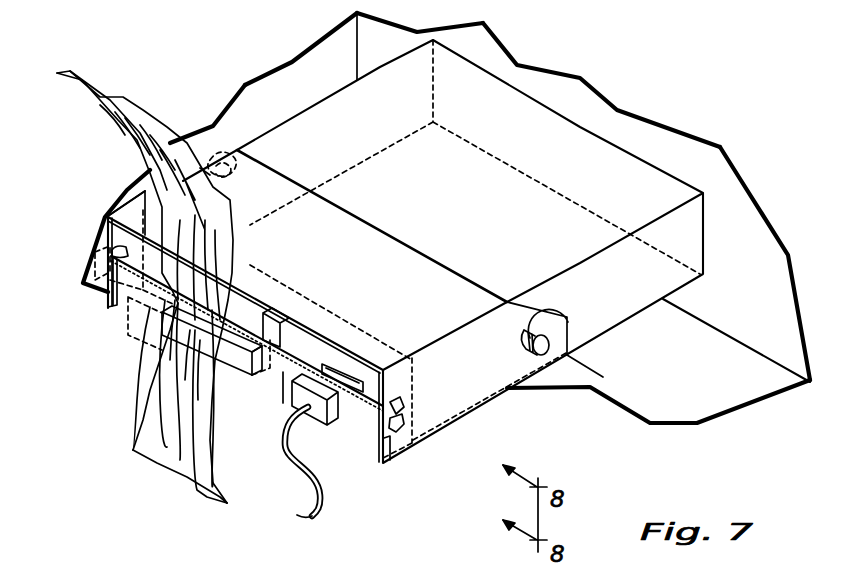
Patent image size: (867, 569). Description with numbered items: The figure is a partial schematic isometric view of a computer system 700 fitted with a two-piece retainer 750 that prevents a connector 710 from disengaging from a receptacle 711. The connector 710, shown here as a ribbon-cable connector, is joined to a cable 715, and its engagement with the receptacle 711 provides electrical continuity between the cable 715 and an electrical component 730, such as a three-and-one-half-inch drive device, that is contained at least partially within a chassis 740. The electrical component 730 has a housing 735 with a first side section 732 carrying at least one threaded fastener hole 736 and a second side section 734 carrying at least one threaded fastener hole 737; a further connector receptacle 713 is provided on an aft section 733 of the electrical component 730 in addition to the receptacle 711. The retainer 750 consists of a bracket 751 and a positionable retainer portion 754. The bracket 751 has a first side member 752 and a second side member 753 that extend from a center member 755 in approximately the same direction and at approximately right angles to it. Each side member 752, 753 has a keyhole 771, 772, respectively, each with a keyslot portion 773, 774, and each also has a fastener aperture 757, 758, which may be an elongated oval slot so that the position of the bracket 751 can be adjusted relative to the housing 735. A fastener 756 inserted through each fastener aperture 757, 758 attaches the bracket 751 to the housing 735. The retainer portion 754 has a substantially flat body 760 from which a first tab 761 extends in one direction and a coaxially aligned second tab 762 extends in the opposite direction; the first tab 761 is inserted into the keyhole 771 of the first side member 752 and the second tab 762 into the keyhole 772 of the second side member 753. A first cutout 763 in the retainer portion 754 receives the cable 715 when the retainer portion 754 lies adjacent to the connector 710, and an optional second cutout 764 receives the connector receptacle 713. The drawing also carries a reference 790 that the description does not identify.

The computer system 700 is at (778, 410).
The connector 710 is at (163, 345).
The receptacle 711 is at (272, 365).
The connector receptacle 713 is at (281, 463).
The cable 715 is at (170, 453).
The electrical component 730 is at (520, 107).
The first side section 732 is at (671, 276).
The aft section 733 is at (110, 227).
The second side section 734 is at (343, 122).
The housing 735 is at (653, 192).
The threaded fastener hole 736 is at (526, 335).
The threaded fastener hole 737 is at (255, 124).
The chassis 740 is at (748, 191).
The two-piece retainer 750 is at (512, 402).
The bracket 751 is at (350, 227).
The first side member 752 is at (462, 403).
The second side member 753 is at (128, 185).
The retainer portion 754 is at (140, 327).
The center member 755 is at (430, 277).
The fastener 756 is at (204, 168).
The fastener aperture 757 is at (575, 350).
The fastener aperture 758 is at (237, 157).
The body 760 is at (300, 367).
The first tab 761 is at (405, 425).
The second tab 762 is at (95, 262).
The first cutout 763 is at (133, 450).
The cutout 764 is at (335, 365).
The keyhole 771 is at (401, 408).
The keyhole 772 is at (145, 249).
The keyslot portion 773 is at (392, 430).
The keyslot portion 774 is at (110, 290).
The flap 790 is at (307, 347).